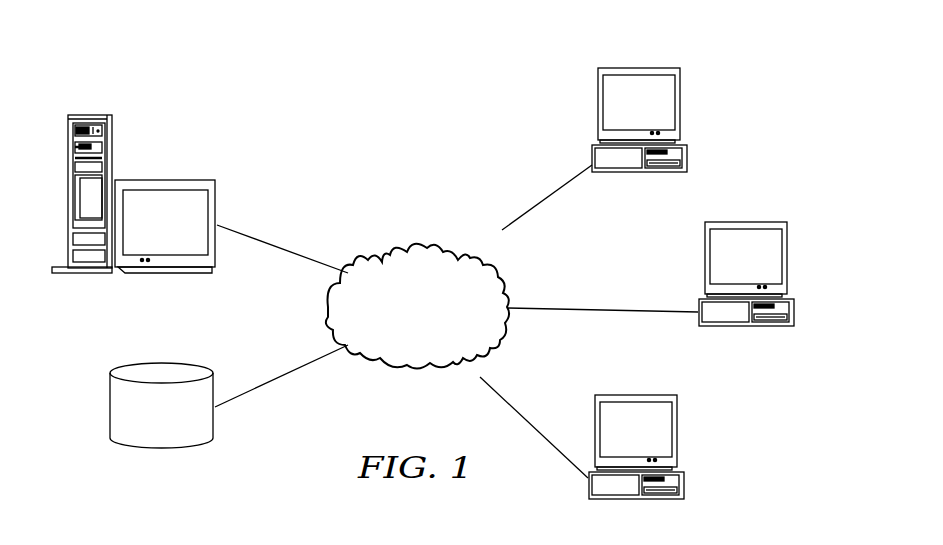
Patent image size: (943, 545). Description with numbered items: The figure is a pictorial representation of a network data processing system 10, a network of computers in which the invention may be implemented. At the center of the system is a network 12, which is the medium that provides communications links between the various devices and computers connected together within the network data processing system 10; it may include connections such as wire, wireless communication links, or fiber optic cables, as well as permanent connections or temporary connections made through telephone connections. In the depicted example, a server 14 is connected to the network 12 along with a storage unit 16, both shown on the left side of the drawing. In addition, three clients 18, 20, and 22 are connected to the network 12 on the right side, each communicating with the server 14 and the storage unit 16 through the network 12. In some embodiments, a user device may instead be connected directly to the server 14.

The network data processing system 10 is at (303, 134).
The network 12 is at (432, 333).
The server 14 is at (112, 137).
The storage unit 16 is at (110, 402).
The client 18 is at (682, 113).
The client 20 is at (788, 262).
The client 22 is at (678, 437).